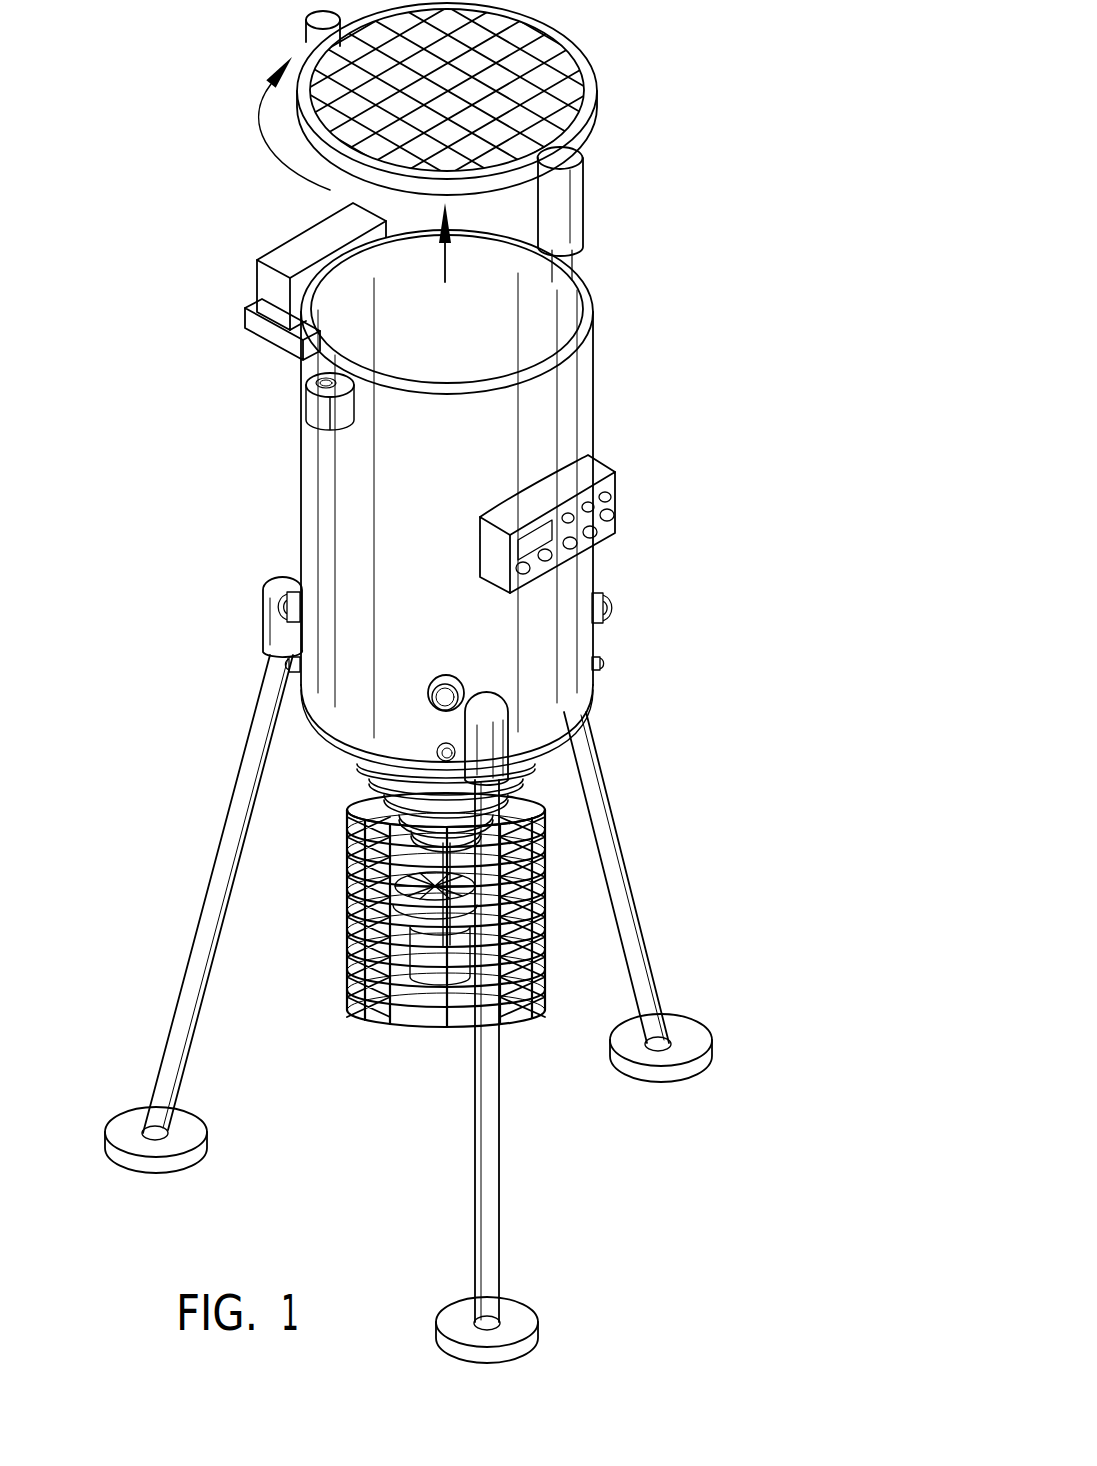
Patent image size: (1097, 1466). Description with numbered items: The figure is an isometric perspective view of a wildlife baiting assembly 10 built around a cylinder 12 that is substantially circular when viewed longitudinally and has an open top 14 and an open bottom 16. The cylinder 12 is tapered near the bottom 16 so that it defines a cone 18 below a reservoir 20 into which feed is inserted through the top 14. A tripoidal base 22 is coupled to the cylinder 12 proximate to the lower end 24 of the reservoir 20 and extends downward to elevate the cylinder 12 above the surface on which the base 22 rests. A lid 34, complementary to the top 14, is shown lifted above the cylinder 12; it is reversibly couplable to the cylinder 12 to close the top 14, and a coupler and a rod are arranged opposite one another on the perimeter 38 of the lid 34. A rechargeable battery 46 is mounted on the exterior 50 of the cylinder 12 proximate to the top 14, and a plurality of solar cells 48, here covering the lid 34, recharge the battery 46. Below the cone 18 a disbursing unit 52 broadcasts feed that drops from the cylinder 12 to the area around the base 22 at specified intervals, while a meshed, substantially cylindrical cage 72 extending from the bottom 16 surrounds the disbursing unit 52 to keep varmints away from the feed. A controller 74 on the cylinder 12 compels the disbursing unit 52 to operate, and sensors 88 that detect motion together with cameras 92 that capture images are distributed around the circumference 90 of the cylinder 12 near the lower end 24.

The wildlife baiting assembly 10 is at (503, 681).
The cylinder 12 is at (365, 466).
The top 14 is at (591, 340).
The bottom 16 is at (356, 819).
The cone 18 is at (356, 769).
The reservoir 20 is at (358, 635).
The base 22 is at (197, 980).
The lower end 24 is at (315, 716).
The lid 34 is at (596, 90).
The perimeter 38 is at (299, 112).
The battery 46 is at (292, 253).
The solar cells 48 is at (517, 47).
The exterior 50 is at (476, 471).
The disbursing unit 52 is at (418, 946).
The cage 72 is at (548, 932).
The controller 74 is at (590, 490).
The sensors 88 is at (550, 730).
The circumference 90 is at (303, 347).
The cameras 92 is at (614, 612).